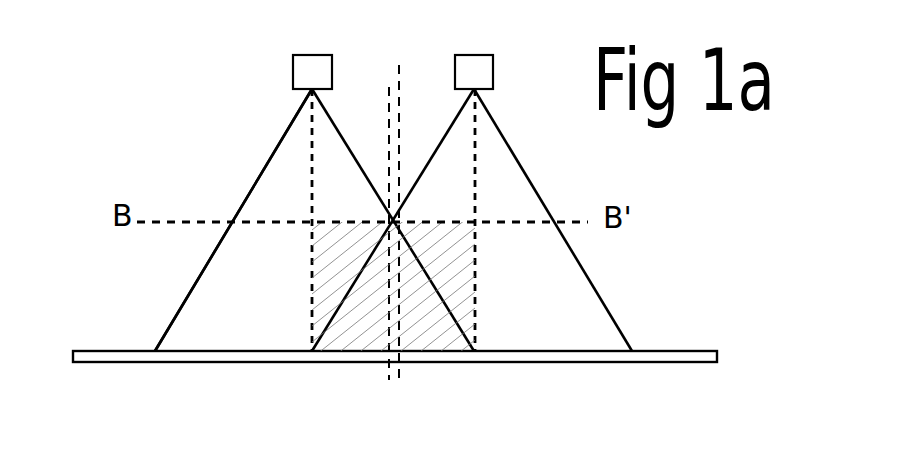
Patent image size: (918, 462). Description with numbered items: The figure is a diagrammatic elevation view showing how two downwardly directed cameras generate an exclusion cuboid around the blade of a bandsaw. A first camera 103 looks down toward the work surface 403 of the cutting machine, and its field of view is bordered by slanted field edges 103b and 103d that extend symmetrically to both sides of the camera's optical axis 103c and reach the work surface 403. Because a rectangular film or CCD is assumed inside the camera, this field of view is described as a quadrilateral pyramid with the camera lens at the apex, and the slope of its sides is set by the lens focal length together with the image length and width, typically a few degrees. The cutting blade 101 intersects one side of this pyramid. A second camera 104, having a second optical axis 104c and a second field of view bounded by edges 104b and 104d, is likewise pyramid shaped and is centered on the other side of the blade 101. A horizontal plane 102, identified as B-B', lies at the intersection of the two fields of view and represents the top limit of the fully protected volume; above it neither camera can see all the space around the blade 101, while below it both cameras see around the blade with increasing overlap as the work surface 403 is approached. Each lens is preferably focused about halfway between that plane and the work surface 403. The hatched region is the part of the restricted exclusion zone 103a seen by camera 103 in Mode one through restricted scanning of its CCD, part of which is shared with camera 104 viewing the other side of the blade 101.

The cutting blade 101 is at (398, 69).
The horizontal plane 102 is at (217, 222).
The camera 103 is at (298, 55).
The exclusion zone 103a is at (357, 345).
The field edge 103b is at (248, 200).
The optical axis 103c is at (310, 148).
The field edge 103d is at (359, 150).
The second camera 104 is at (493, 61).
The second field edge 104b is at (518, 157).
The second optical axis 104c is at (476, 197).
The second field edge 104d is at (439, 136).
The work surface 403 is at (497, 363).